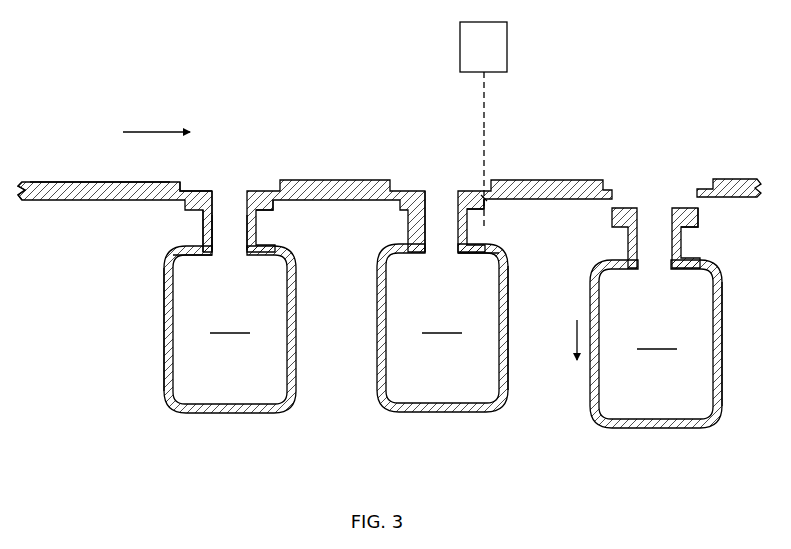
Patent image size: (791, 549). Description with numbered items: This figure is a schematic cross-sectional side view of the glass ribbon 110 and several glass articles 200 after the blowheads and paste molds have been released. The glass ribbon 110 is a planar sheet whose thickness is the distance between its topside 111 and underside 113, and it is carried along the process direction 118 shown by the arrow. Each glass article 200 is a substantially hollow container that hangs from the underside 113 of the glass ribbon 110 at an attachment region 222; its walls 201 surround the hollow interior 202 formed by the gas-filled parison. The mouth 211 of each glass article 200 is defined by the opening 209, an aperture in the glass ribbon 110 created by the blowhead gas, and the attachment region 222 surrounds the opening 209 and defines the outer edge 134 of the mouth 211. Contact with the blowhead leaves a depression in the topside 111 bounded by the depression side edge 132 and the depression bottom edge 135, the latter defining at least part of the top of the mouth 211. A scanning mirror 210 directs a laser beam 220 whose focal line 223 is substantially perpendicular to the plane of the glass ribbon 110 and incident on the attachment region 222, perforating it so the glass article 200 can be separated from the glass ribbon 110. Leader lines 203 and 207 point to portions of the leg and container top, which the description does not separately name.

The glass ribbon 110 is at (106, 202).
The topside 111 is at (70, 181).
The underside 113 is at (50, 201).
The process direction 118 is at (155, 132).
The depression side edge 132 is at (283, 183).
The outer edge of mouth 134 is at (273, 203).
The depression bottom edge 135 is at (195, 191).
The glass article 200 is at (228, 413).
The walls 201 is at (164, 344).
The interior 202 is at (443, 330).
The leg inner face 203 is at (202, 226).
The container top 207 is at (213, 239).
The opening 209 is at (231, 228).
The scanning mirror 210 is at (507, 45).
The mouth 211 is at (213, 219).
The laser beam 220 is at (486, 127).
The attachment region 222 is at (483, 197).
The focal line 223 is at (486, 100).